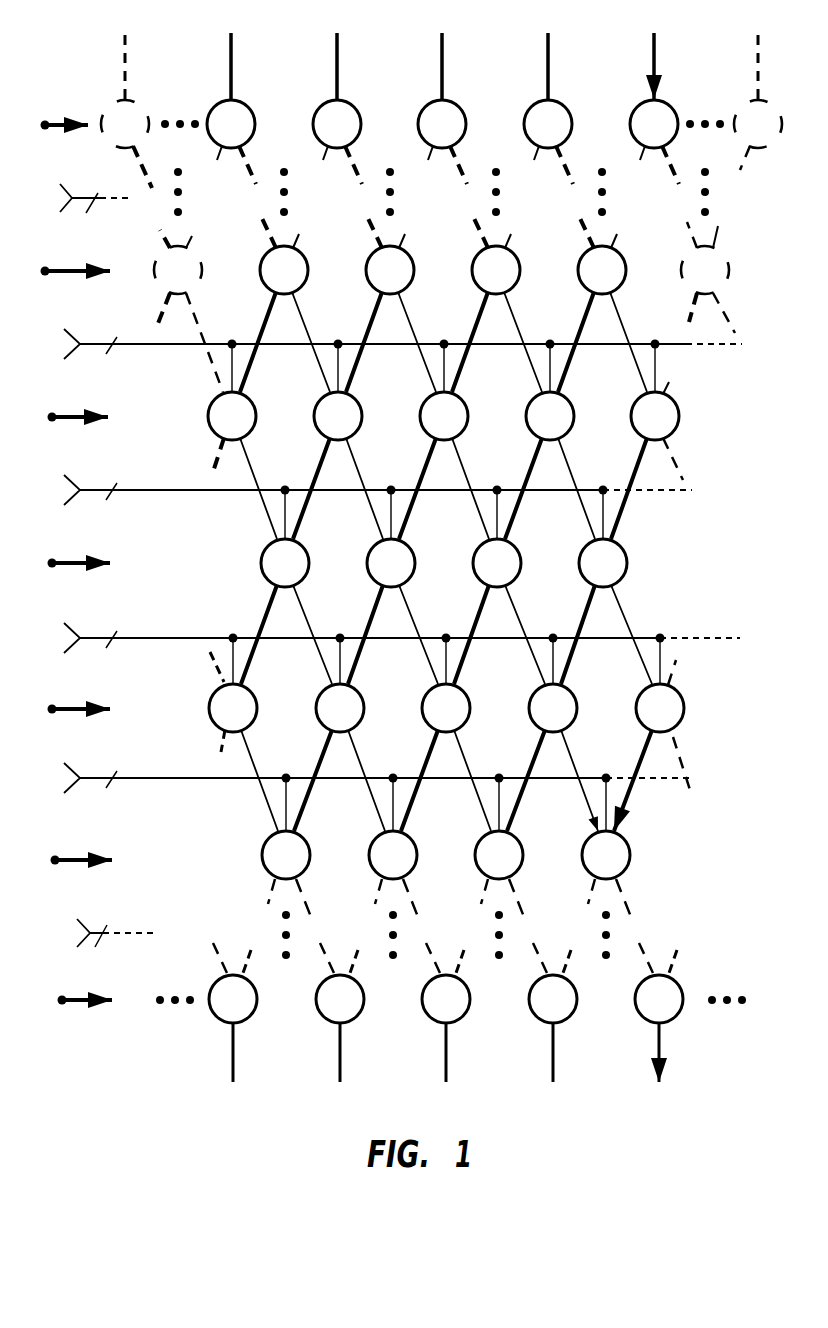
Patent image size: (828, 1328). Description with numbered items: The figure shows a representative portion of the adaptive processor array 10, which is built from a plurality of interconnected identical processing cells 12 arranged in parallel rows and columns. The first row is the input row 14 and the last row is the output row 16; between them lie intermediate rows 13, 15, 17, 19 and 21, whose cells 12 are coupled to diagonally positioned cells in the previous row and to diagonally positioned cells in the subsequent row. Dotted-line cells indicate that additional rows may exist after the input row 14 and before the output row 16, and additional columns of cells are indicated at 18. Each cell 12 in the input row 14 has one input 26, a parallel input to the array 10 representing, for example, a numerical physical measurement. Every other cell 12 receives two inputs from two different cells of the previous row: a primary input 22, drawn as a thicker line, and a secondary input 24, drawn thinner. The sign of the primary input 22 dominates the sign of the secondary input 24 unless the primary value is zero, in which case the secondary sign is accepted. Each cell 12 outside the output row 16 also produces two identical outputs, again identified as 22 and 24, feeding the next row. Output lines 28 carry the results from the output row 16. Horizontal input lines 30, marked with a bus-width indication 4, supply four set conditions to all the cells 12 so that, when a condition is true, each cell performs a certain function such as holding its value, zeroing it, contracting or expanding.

The adaptive processor array 10 is at (626, 11).
The processing cell 12 is at (442, 561).
The intermediate row 13 is at (76, 259).
The input row 14 is at (65, 113).
The intermediate row 15 is at (78, 406).
The output row 16 is at (85, 988).
The intermediate row 17 is at (79, 552).
The additional columns of cells 18 is at (144, 104).
The intermediate row 19 is at (79, 698).
The intermediate row 21 is at (82, 848).
The primary input 22 is at (245, 158).
The secondary input 24 is at (323, 160).
The input 26 is at (233, 63).
The output line 28 is at (235, 1045).
The input lines 30 is at (82, 198).
The bus width 4 is at (104, 572).